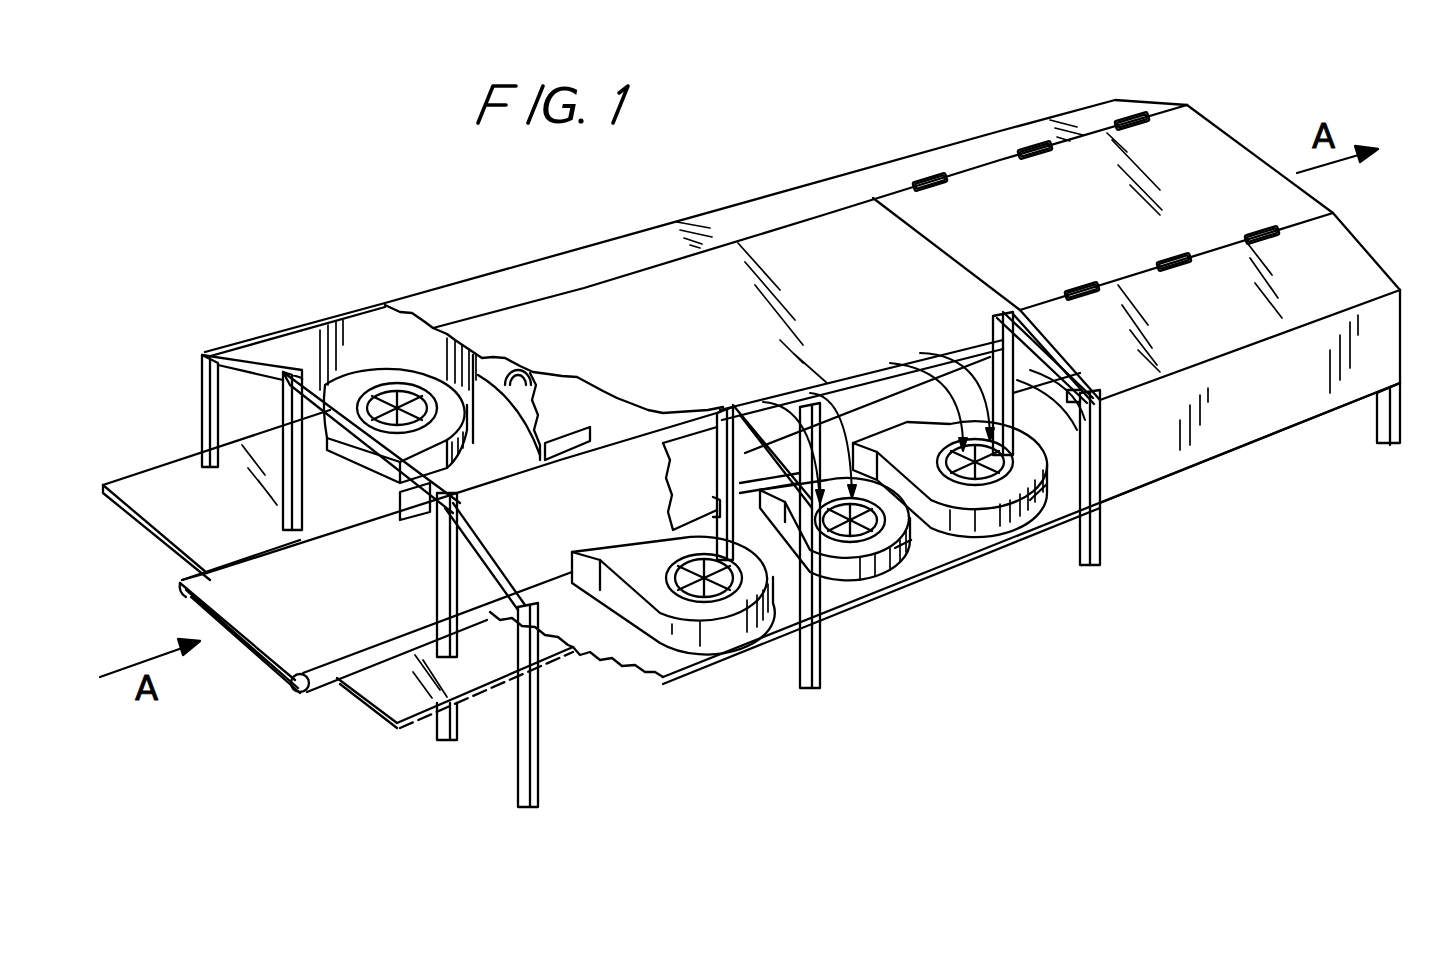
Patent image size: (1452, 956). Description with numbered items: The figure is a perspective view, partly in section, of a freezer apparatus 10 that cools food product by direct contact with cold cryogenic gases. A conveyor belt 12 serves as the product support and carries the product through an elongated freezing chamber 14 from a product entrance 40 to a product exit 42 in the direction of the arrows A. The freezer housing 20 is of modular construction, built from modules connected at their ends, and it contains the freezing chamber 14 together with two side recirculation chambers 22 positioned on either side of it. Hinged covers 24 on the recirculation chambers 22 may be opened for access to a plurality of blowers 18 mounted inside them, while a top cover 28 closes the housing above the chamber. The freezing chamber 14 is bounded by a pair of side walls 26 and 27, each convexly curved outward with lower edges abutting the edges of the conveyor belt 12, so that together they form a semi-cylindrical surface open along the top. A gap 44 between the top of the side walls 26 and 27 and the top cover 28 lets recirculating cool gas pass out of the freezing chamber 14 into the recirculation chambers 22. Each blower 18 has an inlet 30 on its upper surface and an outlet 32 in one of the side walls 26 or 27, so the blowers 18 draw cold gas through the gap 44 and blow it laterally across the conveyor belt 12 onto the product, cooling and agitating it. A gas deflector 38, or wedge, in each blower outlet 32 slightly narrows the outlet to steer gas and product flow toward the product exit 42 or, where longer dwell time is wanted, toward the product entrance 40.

The freezer apparatus 10 is at (312, 292).
The conveyor belt 12 is at (303, 640).
The freezing chamber 14 is at (543, 557).
The blowers 18 is at (733, 637).
The freezer housing 20 is at (1238, 430).
The recirculation chambers 22 is at (280, 345).
The hinged covers 24 is at (1215, 319).
The side wall 26 is at (690, 455).
The side wall 27 is at (565, 393).
The top cover 28 is at (1097, 227).
The inlet 30 is at (910, 560).
The blower outlet 32 is at (407, 497).
The gas deflector 38 is at (617, 541).
The product entrance 40 is at (230, 597).
The product exit 42 is at (1336, 216).
The gap 44 is at (832, 382).